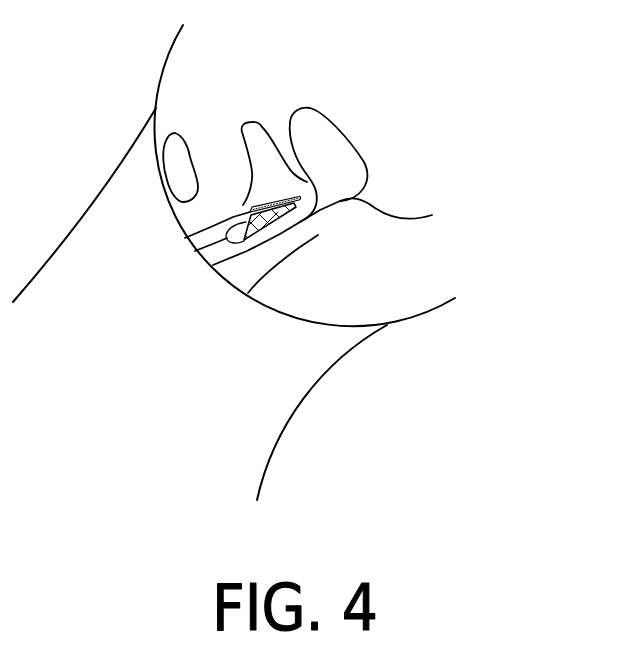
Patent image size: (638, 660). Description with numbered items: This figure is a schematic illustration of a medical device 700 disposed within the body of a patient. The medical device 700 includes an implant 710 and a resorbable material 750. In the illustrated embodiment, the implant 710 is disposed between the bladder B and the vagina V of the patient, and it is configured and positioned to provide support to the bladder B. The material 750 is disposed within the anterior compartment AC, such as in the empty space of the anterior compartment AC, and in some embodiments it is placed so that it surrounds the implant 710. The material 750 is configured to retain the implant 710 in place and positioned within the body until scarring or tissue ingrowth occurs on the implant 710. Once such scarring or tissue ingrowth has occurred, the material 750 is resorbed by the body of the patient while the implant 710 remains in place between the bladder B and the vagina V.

The medical device 700 is at (300, 216).
The implant 710 is at (292, 218).
The material 750 is at (313, 197).
The anterior compartment AC is at (245, 212).
The bladder B is at (271, 164).
The vagina V is at (332, 231).